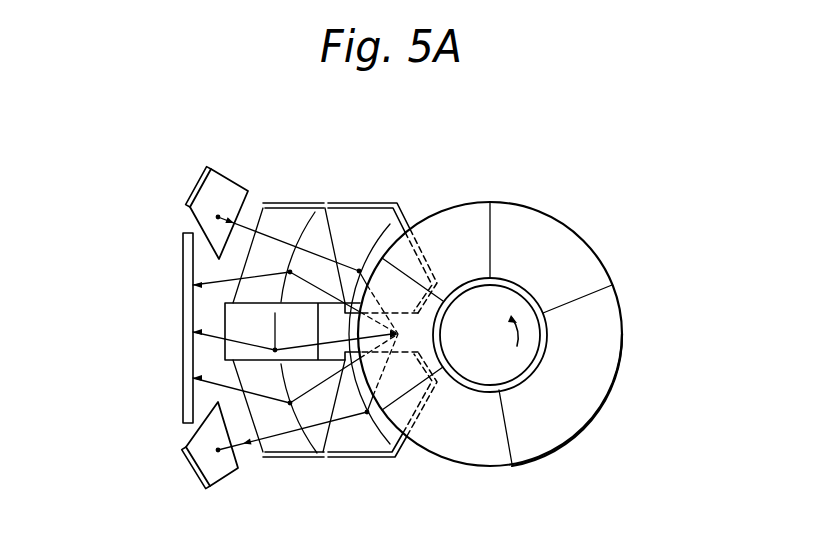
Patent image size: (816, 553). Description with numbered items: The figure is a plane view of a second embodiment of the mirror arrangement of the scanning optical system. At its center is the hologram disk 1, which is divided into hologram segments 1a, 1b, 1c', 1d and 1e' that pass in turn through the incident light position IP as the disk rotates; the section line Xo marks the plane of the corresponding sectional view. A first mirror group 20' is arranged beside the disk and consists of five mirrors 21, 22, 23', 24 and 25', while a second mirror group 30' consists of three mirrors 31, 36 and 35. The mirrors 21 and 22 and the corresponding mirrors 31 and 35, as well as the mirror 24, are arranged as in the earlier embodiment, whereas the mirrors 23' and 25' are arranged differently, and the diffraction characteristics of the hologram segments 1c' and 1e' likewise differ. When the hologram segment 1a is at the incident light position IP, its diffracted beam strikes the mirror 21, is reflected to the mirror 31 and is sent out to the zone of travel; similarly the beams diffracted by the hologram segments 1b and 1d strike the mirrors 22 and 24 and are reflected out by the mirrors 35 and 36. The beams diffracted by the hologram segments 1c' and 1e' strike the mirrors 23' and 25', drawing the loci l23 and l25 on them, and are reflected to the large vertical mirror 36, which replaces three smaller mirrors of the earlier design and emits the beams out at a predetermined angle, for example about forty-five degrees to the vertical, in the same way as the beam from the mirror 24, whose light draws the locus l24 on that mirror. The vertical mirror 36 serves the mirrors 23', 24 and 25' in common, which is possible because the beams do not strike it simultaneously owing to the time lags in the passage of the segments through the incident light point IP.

The hologram disk 1 is at (617, 288).
The hologram segment 1a is at (457, 458).
The hologram segment 1b is at (433, 328).
The hologram segment 1c' is at (490, 220).
The hologram segment 1d is at (585, 248).
The hologram segment 1e' is at (578, 400).
The first mirror group 20' is at (311, 282).
The mirror 21 is at (377, 460).
The mirror 22 is at (397, 205).
The mirror 23' is at (297, 479).
The mirror 24 is at (225, 315).
The mirror 25' is at (306, 192).
The second mirror group 30' is at (216, 155).
The mirror 31 is at (202, 488).
The mirror 35 is at (192, 206).
The vertical mirror 36 is at (183, 246).
The locus of light beam l25 is at (318, 233).
The locus of light beam l24 is at (277, 327).
The locus of light beam l23 is at (284, 380).
The incident light position IP is at (389, 340).
The section line Xo is at (680, 337).